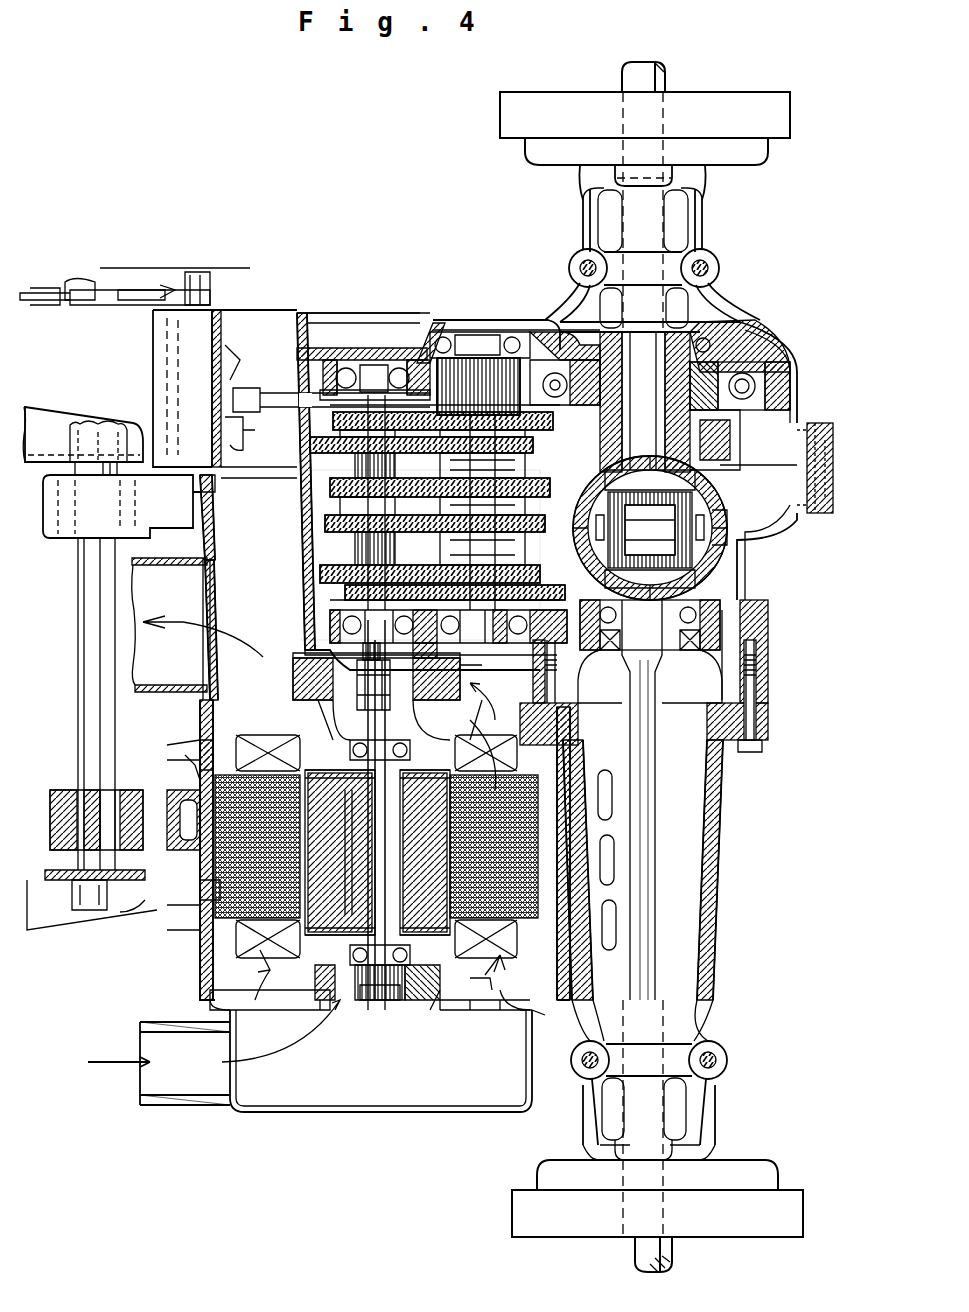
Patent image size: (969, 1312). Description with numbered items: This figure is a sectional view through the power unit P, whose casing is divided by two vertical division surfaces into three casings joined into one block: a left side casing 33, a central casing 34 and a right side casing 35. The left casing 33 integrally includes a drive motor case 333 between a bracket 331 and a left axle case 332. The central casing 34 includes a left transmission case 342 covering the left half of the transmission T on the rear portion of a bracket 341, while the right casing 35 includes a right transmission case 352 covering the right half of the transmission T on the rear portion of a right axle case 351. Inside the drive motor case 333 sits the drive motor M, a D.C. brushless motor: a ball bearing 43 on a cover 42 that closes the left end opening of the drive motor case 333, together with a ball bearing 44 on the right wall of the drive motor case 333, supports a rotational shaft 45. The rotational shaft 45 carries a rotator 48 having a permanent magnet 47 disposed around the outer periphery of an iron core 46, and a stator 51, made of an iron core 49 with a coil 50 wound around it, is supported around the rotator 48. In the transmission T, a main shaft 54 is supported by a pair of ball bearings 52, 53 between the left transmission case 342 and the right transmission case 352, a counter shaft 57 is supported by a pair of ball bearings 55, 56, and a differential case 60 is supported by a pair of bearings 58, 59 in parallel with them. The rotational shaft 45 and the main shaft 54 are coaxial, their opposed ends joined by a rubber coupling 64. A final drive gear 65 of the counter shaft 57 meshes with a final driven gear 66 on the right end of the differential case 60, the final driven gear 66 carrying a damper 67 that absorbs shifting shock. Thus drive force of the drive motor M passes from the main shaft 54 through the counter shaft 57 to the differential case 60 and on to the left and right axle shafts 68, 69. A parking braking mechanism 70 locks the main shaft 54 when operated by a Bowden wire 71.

The Bowden wire 71 is at (100, 283).
The power unit P is at (346, 265).
The right side casing 35 is at (425, 308).
The ball bearing 53 is at (345, 360).
The main shaft 54 is at (375, 362).
The ball bearing 56 is at (443, 332).
The counter shaft 57 is at (480, 330).
The right transmission case 352 is at (548, 330).
The right axle case 351 is at (688, 232).
The bearing 59 is at (712, 318).
The final driven gear 66 is at (790, 382).
The final drive gear 65 is at (548, 430).
The left axle shaft 68 is at (648, 440).
The damper 67 is at (745, 400).
The differential case 60 is at (812, 470).
The central casing 34 is at (762, 596).
The bearing 58 is at (735, 609).
The ball bearing 55 is at (545, 585).
The parking braking mechanism 70 is at (234, 366).
The transmission T is at (300, 512).
The left transmission case 342 is at (305, 563).
The ball bearing 52 is at (313, 630).
The ball bearing 44 is at (249, 673).
The rubber coupling 64 is at (467, 681).
The bracket 341 is at (46, 540).
The drive motor M is at (198, 728).
The drive motor case 333 is at (200, 755).
The bracket 331 is at (48, 800).
The left side casing 33 is at (188, 898).
The left axle case 332 is at (706, 818).
The right axle shaft 69 is at (648, 905).
The iron core 49 is at (230, 920).
The stator 51 is at (125, 990).
The coil 50 is at (235, 950).
The cover 42 is at (330, 1005).
The rotational shaft 45 is at (340, 1000).
The ball bearing 43 is at (400, 1000).
The iron core 46 is at (450, 990).
The permanent magnet 47 is at (492, 990).
The rotator 48 is at (490, 1062).